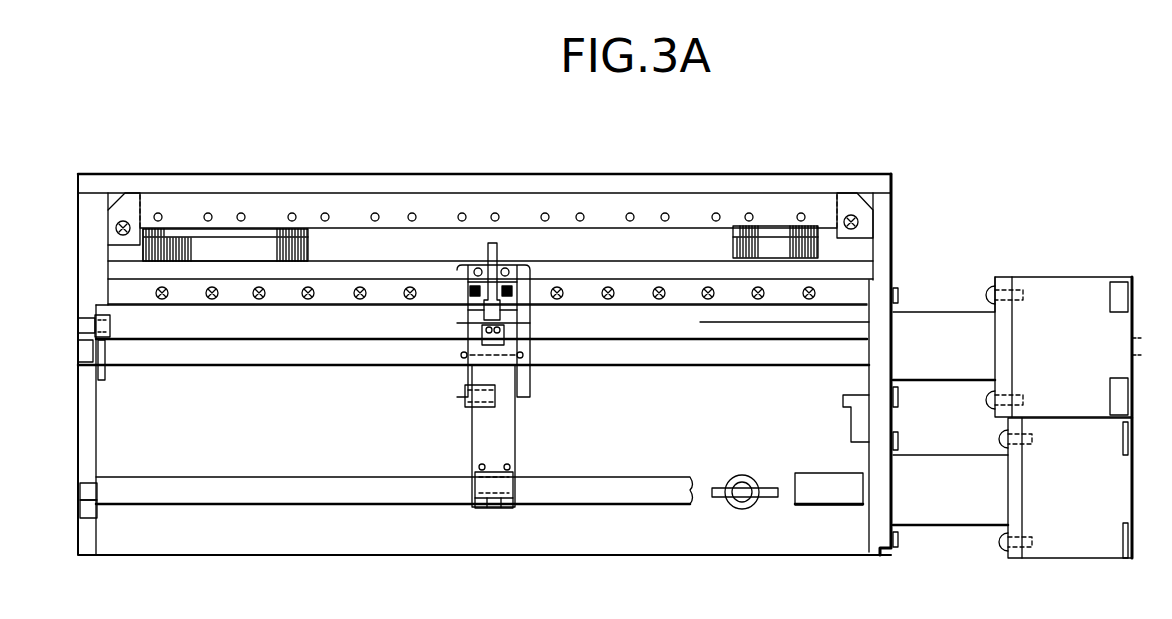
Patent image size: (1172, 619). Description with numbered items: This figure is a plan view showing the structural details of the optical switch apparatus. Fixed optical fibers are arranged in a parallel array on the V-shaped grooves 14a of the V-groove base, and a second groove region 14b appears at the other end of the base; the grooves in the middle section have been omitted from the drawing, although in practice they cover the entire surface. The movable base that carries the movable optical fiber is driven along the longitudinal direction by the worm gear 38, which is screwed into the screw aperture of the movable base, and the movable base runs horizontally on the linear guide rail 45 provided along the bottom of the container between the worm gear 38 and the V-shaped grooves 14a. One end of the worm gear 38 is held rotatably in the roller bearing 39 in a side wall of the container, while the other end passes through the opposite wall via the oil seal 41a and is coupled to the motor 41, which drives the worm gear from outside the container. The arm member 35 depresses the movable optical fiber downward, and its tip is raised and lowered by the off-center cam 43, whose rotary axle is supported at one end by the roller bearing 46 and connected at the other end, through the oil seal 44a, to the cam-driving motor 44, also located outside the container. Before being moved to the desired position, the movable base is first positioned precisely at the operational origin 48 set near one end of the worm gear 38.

The V-shaped grooves 14a is at (277, 248).
The second brush 14b is at (807, 233).
The arm member 35 is at (493, 243).
The linear guide rail 45 is at (680, 283).
The worm gear 38 is at (725, 340).
The operational origin 48 is at (803, 320).
The roller bearing 39 is at (80, 350).
The roller bearing 46 is at (95, 492).
The off-center cam 43 is at (427, 497).
The oil seal 41a is at (897, 330).
The motor 41 is at (1052, 320).
The oil seal 44a is at (898, 493).
The motor 44 is at (1070, 515).